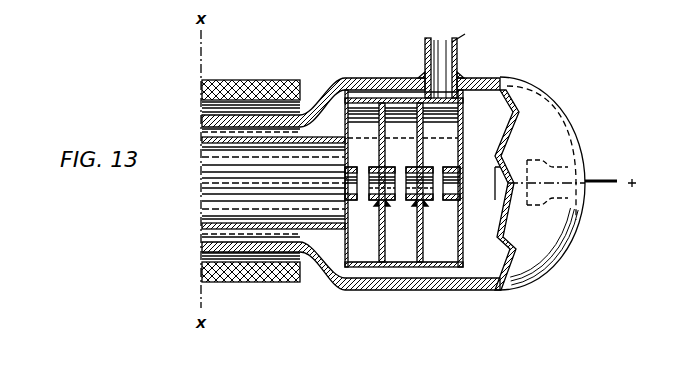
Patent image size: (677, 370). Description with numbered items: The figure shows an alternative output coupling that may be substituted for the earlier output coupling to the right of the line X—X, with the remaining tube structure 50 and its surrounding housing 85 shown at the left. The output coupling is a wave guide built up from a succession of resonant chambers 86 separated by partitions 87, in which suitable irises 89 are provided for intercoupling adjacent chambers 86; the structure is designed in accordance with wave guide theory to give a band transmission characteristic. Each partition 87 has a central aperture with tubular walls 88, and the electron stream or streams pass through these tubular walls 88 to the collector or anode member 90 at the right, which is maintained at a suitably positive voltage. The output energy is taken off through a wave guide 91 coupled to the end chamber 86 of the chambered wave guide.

The inner conductor tube 50 is at (215, 223).
The housing envelope 85 is at (342, 243).
The resonant chambers 86 is at (448, 243).
The partitions 87 is at (387, 138).
The tubular walls 88 is at (374, 199).
The irises 89 is at (391, 150).
The collector or anode member 90 is at (613, 180).
The wave guide 91 is at (427, 52).